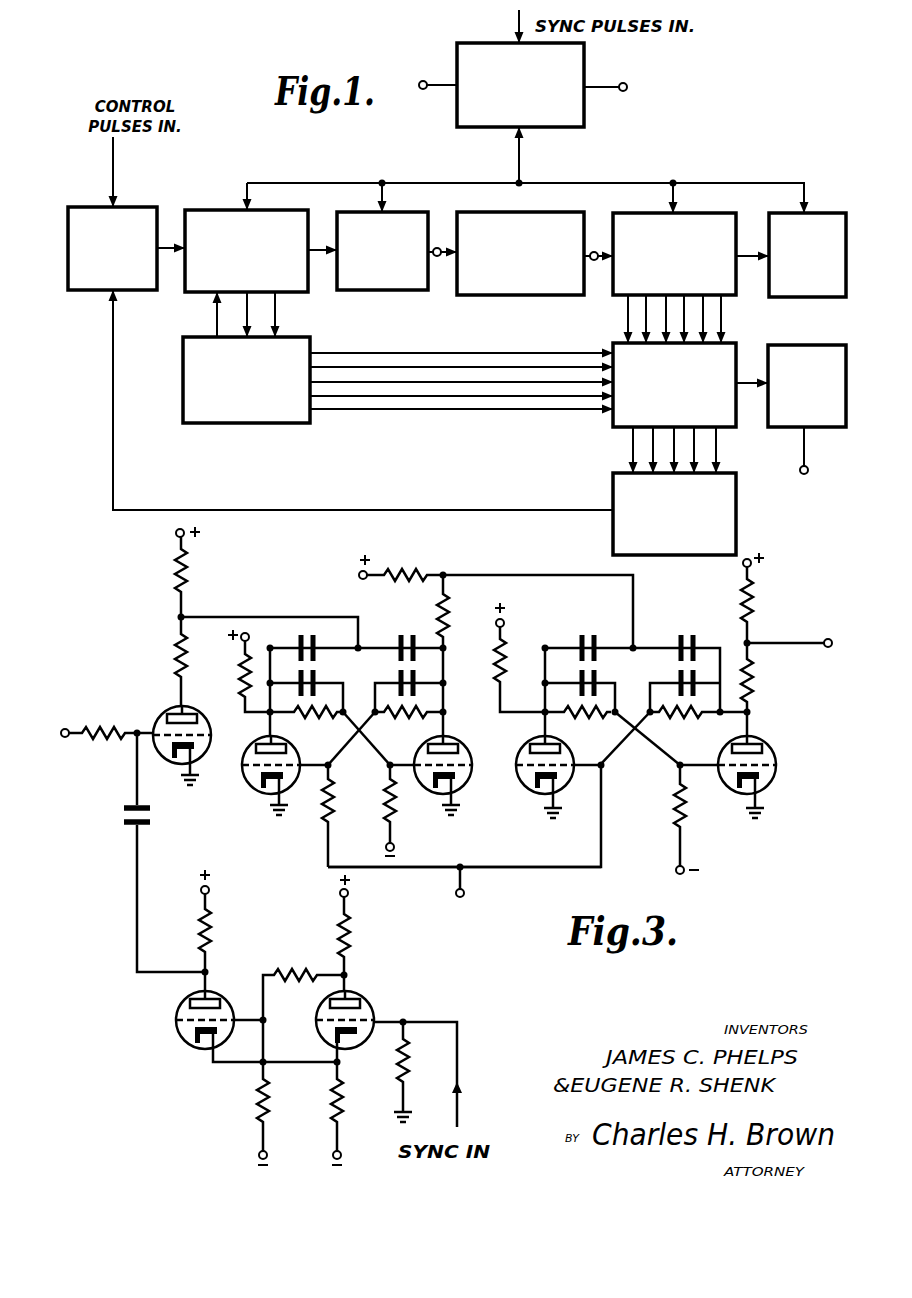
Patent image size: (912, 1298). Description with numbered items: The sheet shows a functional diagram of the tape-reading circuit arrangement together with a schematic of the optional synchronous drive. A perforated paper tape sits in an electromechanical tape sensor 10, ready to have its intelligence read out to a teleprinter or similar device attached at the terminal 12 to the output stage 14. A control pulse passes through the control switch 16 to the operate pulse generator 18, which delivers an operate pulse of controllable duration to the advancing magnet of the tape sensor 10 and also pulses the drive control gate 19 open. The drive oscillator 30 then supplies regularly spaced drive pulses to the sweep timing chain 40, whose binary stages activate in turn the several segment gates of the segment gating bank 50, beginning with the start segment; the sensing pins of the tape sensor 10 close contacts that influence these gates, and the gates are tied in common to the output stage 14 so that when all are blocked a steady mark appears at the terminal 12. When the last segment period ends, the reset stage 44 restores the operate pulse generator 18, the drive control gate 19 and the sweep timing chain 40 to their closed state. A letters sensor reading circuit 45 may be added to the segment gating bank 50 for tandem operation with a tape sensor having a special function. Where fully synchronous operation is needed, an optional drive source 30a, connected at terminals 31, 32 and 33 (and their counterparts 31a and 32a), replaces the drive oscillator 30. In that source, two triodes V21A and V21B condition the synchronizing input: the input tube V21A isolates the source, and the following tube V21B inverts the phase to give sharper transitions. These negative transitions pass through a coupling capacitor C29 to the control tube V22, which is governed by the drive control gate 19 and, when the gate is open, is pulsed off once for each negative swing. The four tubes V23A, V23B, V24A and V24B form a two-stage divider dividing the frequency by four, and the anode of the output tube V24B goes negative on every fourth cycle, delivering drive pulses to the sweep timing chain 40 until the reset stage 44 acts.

In FIG. 1, the electromechanical tape sensor 10 is at (198, 425).
In FIG. 1, the output terminal 12 is at (817, 456).
In FIG. 1, the output stage 14 is at (818, 333).
In FIG. 1, the control switch 16 is at (165, 198).
In FIG. 1, the operate pulse generator 18 is at (190, 294).
In FIG. 1, the drive control gate 19 is at (371, 294).
In FIG. 1, the drive oscillator 30 is at (517, 297).
In FIG. 1, the optional drive source 30a is at (584, 60).
In FIG. 3, the optional drive source 30a is at (466, 948).
In FIG. 1, the terminal 31 is at (437, 262).
In FIG. 1, the terminal 31a is at (437, 63).
In FIG. 3, the terminal 31a is at (69, 728).
In FIG. 1, the terminal 32 is at (594, 250).
In FIG. 1, the terminal 32a is at (631, 93).
In FIG. 3, the terminal 32a is at (830, 650).
In FIG. 1, the terminal 33 is at (521, 183).
In FIG. 3, the terminal 33 is at (466, 891).
In FIG. 1, the sweep timing chain 40 is at (700, 213).
In FIG. 1, the reset stage 44 is at (813, 212).
In FIG. 1, the letters sensor reading circuit 45 is at (737, 530).
In FIG. 1, the segment gating bank 50 is at (615, 428).
In FIG. 3, the input tube V21A is at (396, 1002).
In FIG. 3, the phase inverter tube V21B is at (186, 1040).
In FIG. 3, the control tube V22 is at (161, 716).
In FIG. 3, the frequency divider tube V23A is at (251, 786).
In FIG. 3, the frequency divider tube V23B is at (467, 786).
In FIG. 3, the frequency divider tube V24A is at (520, 762).
In FIG. 3, the output tube V24B is at (776, 766).
In FIG. 3, the coupling capacitor C29 is at (125, 821).